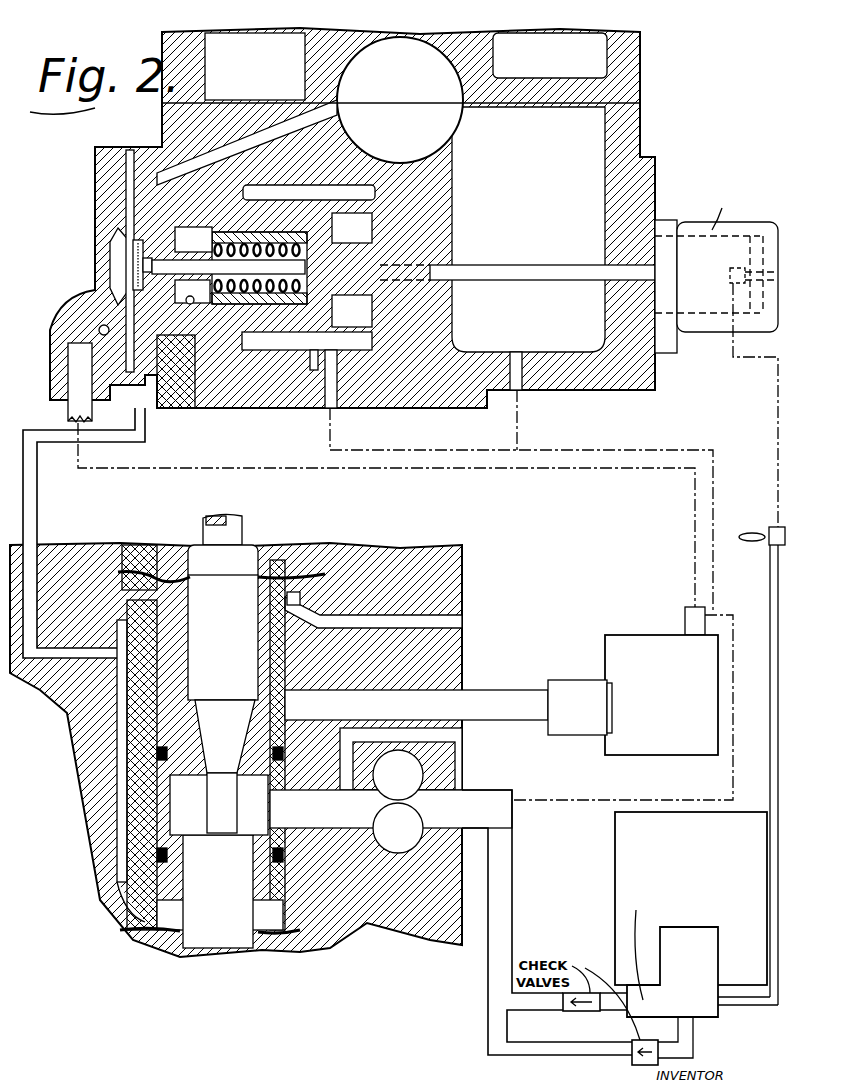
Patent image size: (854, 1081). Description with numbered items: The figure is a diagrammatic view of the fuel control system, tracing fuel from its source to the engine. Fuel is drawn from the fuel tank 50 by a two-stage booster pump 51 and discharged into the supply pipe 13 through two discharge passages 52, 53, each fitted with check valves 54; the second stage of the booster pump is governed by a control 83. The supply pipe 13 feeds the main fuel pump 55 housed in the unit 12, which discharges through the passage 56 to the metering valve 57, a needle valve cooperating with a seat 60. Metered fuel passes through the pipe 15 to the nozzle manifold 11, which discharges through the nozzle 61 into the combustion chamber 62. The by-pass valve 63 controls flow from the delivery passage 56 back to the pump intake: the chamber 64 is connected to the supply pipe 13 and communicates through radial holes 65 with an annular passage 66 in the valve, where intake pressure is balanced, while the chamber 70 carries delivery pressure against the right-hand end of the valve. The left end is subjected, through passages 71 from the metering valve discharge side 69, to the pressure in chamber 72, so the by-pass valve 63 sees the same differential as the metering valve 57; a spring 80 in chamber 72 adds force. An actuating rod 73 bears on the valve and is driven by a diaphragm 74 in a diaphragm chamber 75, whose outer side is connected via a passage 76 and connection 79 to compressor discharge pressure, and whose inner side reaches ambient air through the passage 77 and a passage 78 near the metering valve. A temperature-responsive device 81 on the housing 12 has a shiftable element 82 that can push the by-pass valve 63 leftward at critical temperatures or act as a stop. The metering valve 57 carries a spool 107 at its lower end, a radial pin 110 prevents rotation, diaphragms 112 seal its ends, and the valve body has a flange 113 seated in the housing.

The nozzle manifold 11 is at (563, 683).
The unit 12 is at (590, 392).
The supply pipe 13 is at (505, 893).
The pipe 15 is at (485, 700).
The fuel tank 50 is at (630, 835).
The booster pump 51 is at (713, 1000).
The discharge passage 52 is at (540, 1004).
The discharge passage 53 is at (530, 1058).
The check valves 54 is at (640, 1045).
The main fuel pump 55 is at (425, 772).
The passage 56 is at (322, 812).
The metering valve 57 is at (203, 722).
The seat 60 is at (160, 770).
The nozzle 61 is at (612, 705).
The combustion chamber 62 is at (640, 642).
The by-pass valve 63 is at (258, 297).
The chamber 64 is at (313, 350).
The radial holes 65 is at (350, 330).
The annular passage 66 is at (372, 318).
The discharge side of the metering valve 69 is at (355, 130).
The chamber 70 is at (517, 392).
The passages 71 is at (128, 210).
The chamber 72 is at (197, 305).
The actuating rod 73 is at (193, 265).
The diaphragm 74 is at (133, 250).
The diaphragm chamber 75 is at (112, 262).
The passage 76 is at (100, 328).
The passage 77 is at (162, 403).
The passage 78 is at (463, 622).
The connection 79 is at (68, 410).
The spring 80 is at (307, 339).
The temperature-responsive device 81 is at (708, 320).
The shiftable element 82 is at (517, 265).
The control 83 is at (766, 542).
The spool 107 is at (210, 910).
The pin 110 is at (233, 527).
The diaphragms 112 is at (272, 573).
The flange 113 is at (352, 562).